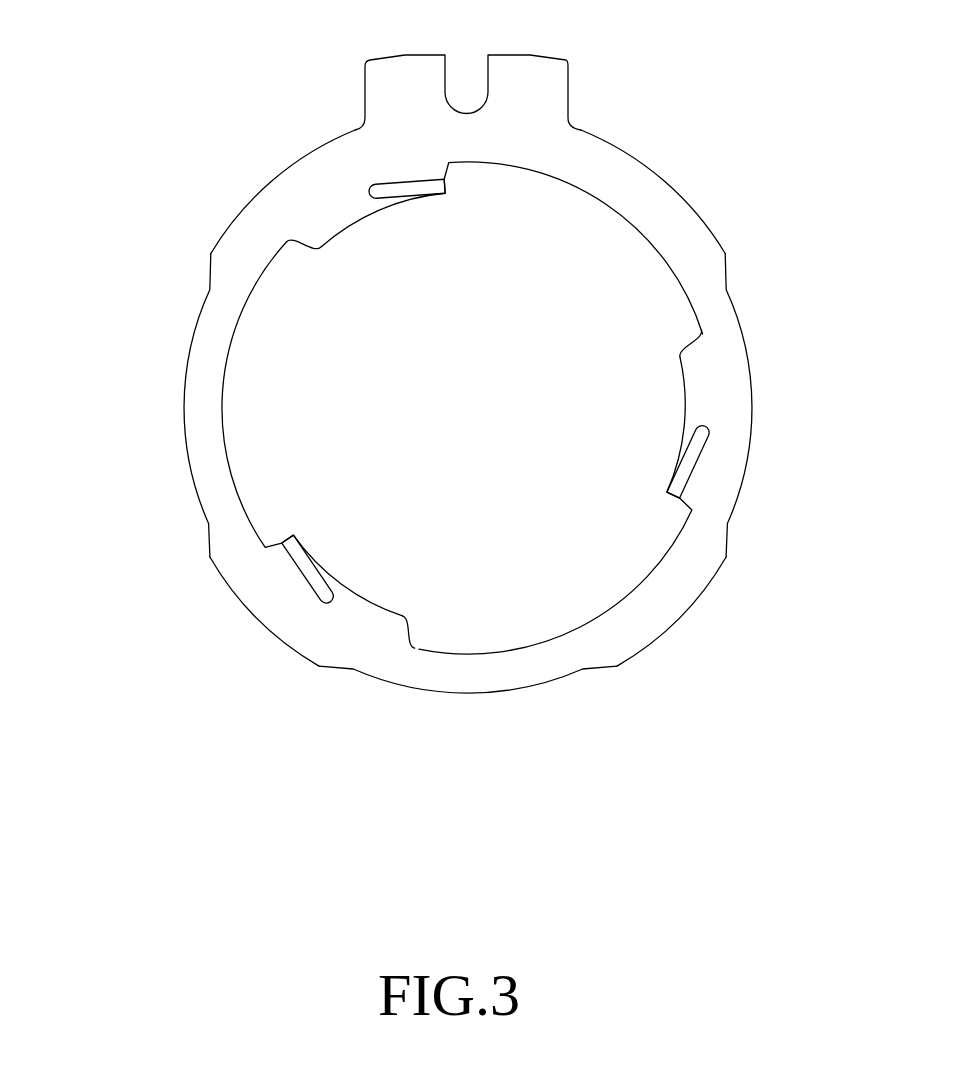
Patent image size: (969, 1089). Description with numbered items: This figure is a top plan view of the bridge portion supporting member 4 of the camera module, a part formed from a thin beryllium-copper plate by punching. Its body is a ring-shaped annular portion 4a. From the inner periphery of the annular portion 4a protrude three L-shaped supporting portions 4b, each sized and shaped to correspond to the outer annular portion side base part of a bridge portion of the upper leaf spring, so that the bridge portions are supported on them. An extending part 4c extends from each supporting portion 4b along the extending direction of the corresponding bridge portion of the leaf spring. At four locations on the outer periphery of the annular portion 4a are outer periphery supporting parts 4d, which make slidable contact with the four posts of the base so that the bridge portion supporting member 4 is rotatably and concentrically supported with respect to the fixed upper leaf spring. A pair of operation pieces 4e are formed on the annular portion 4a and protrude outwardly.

The bridge portion supporting member 4 is at (715, 138).
The ring-shaped annular portion 4a is at (208, 385).
The L-shaped supporting portion 4b is at (346, 248).
The extending part 4c is at (408, 186).
The outer periphery supporting part 4d is at (262, 190).
The operation piece 4e is at (405, 85).